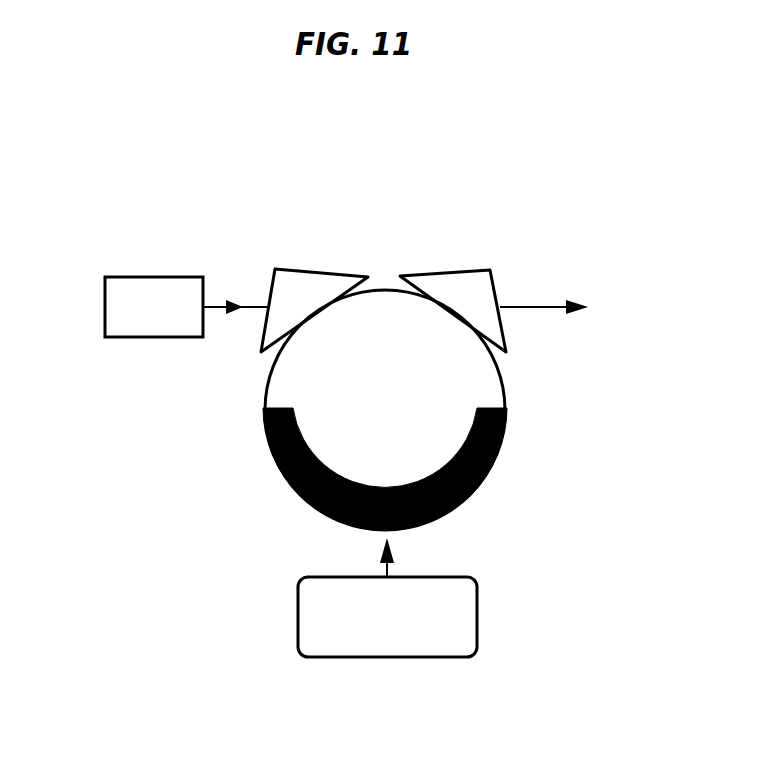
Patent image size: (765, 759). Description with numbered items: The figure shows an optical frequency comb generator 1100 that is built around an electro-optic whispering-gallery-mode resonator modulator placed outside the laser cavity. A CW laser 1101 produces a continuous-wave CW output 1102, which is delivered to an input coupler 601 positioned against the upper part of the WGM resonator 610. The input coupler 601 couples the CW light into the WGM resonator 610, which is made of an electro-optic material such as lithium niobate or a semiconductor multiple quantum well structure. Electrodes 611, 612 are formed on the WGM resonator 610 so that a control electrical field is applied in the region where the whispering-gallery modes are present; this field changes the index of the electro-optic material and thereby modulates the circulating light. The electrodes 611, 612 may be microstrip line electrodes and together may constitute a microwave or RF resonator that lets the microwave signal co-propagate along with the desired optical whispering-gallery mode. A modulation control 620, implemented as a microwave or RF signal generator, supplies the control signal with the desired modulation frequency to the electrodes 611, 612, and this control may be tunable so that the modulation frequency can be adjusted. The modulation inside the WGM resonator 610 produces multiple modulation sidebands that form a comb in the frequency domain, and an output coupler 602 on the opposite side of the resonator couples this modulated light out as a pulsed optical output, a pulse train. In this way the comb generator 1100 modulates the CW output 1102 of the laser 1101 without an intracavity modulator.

The optical frequency comb generator 1100 is at (268, 128).
The input coupler 601 is at (290, 268).
The output coupler 602 is at (485, 270).
The WGM resonator 610 is at (278, 380).
The electrode 611 is at (502, 489).
The electrode 612 is at (385, 469).
The modulation control 620 is at (298, 610).
The CW laser 1101 is at (110, 302).
The CW output 1102 is at (245, 300).